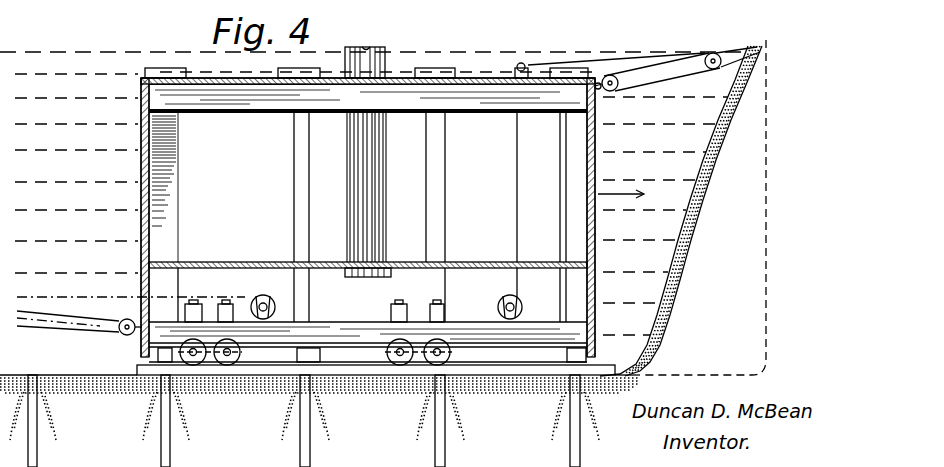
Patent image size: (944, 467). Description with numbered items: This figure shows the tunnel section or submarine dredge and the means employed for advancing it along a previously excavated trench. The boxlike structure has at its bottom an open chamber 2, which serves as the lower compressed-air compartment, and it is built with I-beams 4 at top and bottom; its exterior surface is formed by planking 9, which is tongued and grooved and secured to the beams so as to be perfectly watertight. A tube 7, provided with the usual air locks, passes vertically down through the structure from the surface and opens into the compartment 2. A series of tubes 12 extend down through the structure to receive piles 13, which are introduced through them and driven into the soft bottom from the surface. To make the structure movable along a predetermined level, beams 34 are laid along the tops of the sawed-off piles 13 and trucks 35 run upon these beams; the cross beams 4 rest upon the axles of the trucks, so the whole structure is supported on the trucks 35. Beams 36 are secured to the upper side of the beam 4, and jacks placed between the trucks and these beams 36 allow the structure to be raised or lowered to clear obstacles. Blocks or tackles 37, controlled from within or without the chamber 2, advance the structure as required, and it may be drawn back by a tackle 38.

The open chamber 2 is at (368, 215).
The I-beams 4 is at (462, 104).
The tube 7 is at (386, 205).
The planking 9 is at (142, 195).
The tubes 12 is at (295, 192).
The piles 13 is at (567, 412).
The beams 34 is at (136, 367).
The trucks 35 is at (226, 366).
The beams 36 is at (220, 301).
The blocks or tackles 37 is at (661, 73).
The tackle 38 is at (72, 322).